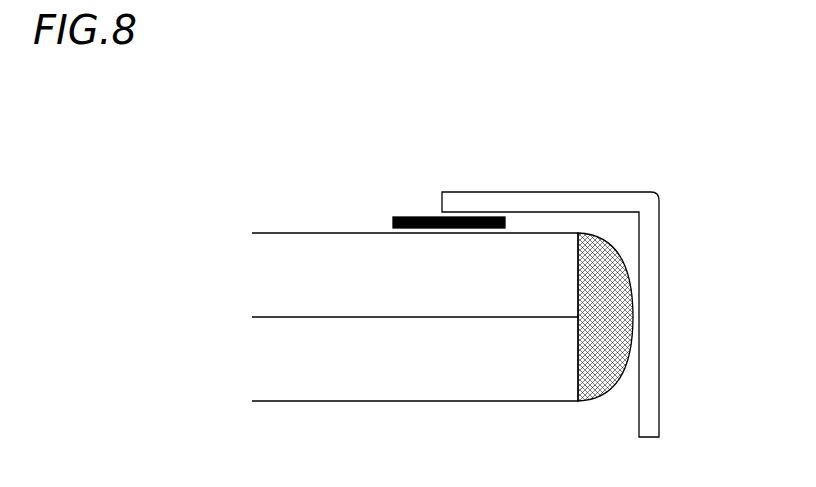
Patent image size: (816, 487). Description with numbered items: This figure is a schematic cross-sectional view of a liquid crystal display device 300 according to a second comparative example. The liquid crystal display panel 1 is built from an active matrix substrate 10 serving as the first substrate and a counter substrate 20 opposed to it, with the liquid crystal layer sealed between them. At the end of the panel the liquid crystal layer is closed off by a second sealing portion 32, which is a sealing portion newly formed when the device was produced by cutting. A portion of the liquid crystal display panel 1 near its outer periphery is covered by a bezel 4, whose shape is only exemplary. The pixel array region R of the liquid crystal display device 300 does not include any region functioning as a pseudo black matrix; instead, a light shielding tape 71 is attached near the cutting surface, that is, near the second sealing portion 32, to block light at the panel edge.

The pixel array region R is at (575, 133).
The liquid crystal display panel 1 is at (330, 175).
The active matrix substrate 10 is at (272, 342).
The counter substrate 20 is at (328, 258).
The light shielding tape 71 is at (414, 217).
The second sealing portion 32 is at (603, 355).
The bezel 4 is at (655, 302).
The liquid crystal display device 300 is at (697, 186).